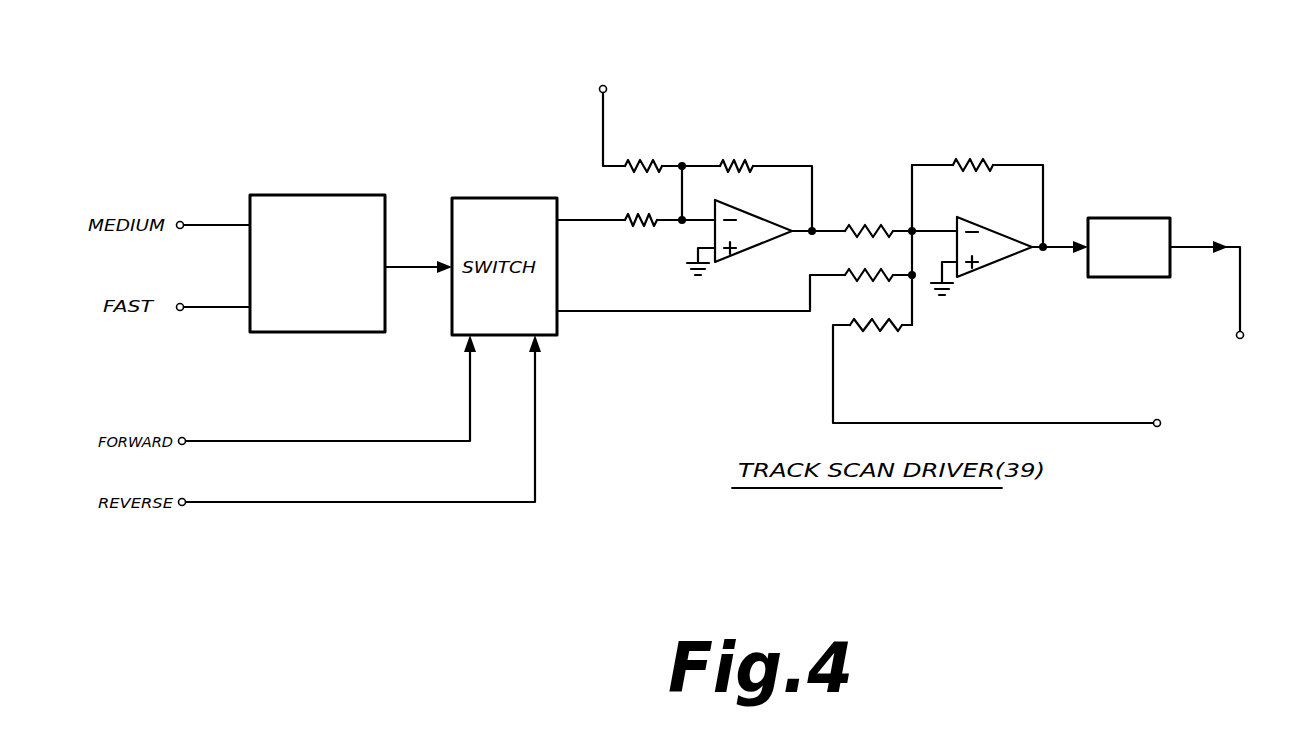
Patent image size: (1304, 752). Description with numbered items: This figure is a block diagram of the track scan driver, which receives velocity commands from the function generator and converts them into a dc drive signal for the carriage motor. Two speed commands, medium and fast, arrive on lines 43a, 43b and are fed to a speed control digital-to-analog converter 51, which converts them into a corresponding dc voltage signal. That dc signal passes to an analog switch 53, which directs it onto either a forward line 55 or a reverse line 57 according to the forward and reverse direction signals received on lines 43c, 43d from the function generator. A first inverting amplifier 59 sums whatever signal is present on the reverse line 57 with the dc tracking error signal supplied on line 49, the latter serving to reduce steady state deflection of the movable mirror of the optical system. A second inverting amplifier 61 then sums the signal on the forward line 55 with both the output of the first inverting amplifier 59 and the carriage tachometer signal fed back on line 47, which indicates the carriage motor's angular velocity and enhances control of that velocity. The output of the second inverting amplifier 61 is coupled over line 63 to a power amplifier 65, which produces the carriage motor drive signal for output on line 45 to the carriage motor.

The line 43a is at (214, 222).
The line 43b is at (195, 312).
The line 43c is at (262, 440).
The line 43d is at (272, 503).
The line 45 is at (1240, 292).
The line 47 is at (975, 422).
The line 49 is at (605, 127).
The speed control digital-to-analog converter 51 is at (385, 197).
The analog switch 53 is at (557, 205).
The forward line 55 is at (612, 310).
The reverse line 57 is at (593, 217).
The first inverting amplifier 59 is at (745, 253).
The second inverting amplifier 61 is at (993, 264).
The line 63 is at (1053, 240).
The power amplifier 65 is at (1170, 218).